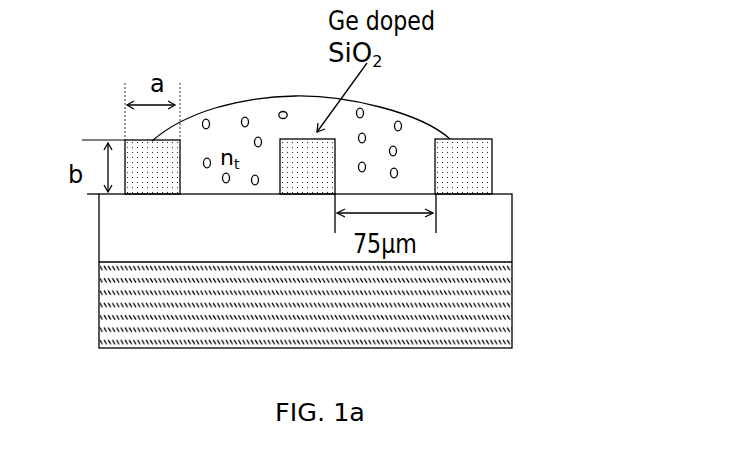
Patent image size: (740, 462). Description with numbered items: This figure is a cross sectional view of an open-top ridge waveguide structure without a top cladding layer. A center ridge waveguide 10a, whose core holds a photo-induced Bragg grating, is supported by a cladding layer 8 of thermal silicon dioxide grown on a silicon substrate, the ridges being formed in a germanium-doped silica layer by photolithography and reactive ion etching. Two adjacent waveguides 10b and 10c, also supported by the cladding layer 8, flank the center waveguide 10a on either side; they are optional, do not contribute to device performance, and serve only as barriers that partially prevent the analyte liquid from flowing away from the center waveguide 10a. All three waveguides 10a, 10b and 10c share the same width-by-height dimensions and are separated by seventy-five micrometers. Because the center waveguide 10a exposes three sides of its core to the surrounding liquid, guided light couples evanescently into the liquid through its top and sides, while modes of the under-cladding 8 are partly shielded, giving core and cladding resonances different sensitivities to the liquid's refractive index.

The cladding layer 8 is at (512, 231).
The center ridge waveguide 10a is at (299, 139).
The adjacent waveguide 10b is at (138, 139).
The adjacent waveguide 10c is at (451, 138).